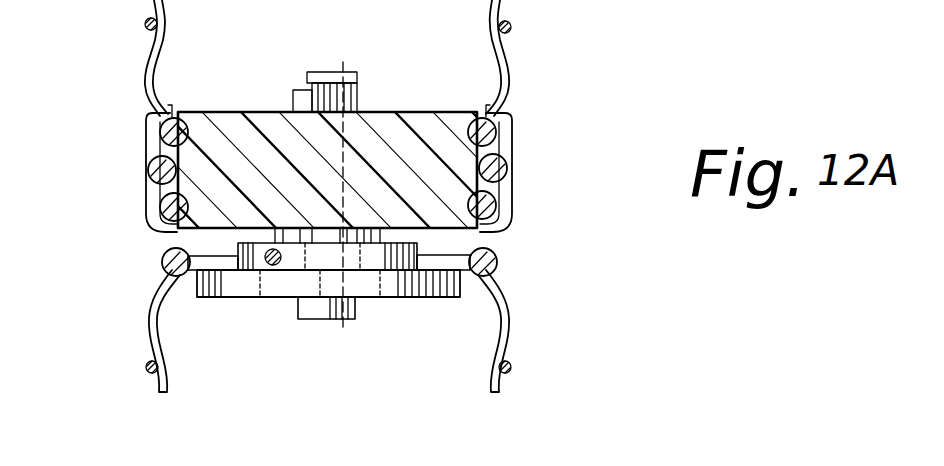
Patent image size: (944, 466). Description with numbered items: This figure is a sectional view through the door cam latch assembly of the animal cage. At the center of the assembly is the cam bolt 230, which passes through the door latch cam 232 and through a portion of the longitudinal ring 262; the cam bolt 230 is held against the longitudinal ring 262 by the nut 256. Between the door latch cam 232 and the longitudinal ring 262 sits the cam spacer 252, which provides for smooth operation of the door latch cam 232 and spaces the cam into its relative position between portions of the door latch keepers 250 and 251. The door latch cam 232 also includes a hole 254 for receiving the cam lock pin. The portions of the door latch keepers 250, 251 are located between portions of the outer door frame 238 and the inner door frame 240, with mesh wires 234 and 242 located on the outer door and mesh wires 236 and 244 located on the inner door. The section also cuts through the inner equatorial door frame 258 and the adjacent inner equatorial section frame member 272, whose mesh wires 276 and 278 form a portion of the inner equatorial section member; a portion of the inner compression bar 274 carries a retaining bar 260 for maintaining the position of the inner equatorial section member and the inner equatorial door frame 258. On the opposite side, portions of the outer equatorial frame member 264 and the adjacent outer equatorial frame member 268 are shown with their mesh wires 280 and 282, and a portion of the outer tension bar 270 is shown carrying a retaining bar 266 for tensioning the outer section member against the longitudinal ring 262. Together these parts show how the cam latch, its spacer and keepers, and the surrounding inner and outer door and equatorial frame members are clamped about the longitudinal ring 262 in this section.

The cam bolt 230 is at (354, 320).
The door latch cam 232 is at (447, 298).
The mesh wire 234 is at (146, 316).
The mesh wire 236 is at (517, 317).
The outer door frame 238 is at (163, 259).
The inner door frame 240 is at (498, 258).
The mesh wire 242 is at (146, 368).
The mesh wire 244 is at (511, 368).
The door latch keeper 250 is at (218, 268).
The door latch keeper 251 is at (438, 264).
The cam spacer 252 is at (302, 240).
The hole 254 is at (272, 265).
The nut 256 is at (293, 92).
The inner equatorial door frame 258 is at (512, 212).
The retaining bar 260 is at (512, 143).
The longitudinal ring 262 is at (408, 110).
The outer equatorial frame member 264 is at (170, 206).
The retaining bar 266 is at (150, 141).
The outer equatorial frame member 268 is at (160, 124).
The outer tension bar 270 is at (150, 173).
The inner equatorial section frame member 272 is at (497, 115).
The inner compression bar 274 is at (513, 173).
The mesh wire 276 is at (513, 66).
The mesh wire 278 is at (511, 27).
The mesh wire 280 is at (145, 64).
The mesh wire 282 is at (145, 26).